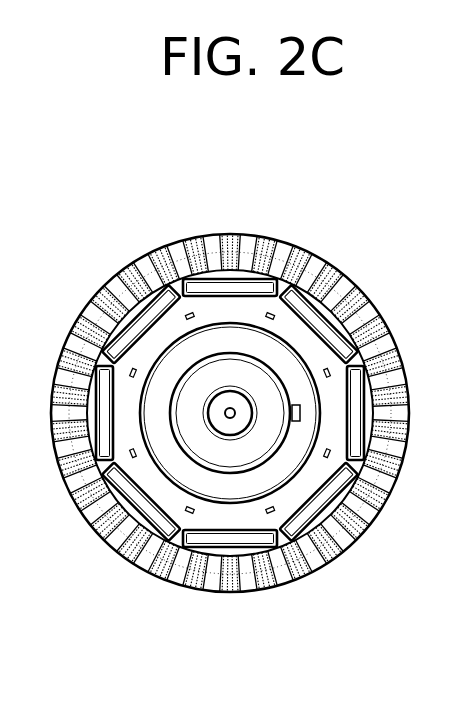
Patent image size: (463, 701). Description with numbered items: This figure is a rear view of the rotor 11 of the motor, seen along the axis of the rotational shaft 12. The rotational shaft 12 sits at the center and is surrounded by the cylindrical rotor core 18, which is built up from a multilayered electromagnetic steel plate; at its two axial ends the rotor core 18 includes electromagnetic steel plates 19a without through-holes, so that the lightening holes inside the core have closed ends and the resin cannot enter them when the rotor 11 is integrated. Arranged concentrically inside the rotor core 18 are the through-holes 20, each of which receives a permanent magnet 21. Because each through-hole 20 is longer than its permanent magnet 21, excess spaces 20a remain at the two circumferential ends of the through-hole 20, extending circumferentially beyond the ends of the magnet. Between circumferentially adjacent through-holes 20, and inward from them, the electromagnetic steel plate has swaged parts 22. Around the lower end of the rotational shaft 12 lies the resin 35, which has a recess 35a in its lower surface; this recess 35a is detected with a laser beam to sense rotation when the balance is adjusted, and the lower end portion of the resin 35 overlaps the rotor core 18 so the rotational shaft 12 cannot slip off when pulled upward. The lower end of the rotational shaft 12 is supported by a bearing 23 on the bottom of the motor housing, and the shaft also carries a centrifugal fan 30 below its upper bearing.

The rotor 11 is at (319, 212).
The rotational shaft 12 is at (231, 411).
The rotor core 18 is at (133, 262).
The electromagnetic steel plate without through-holes 19a is at (95, 423).
The through-hole 20 is at (338, 288).
The excess space 20a is at (181, 283).
The permanent magnet 21 is at (326, 270).
The swaged part 22 is at (275, 262).
The bearing 23 is at (263, 390).
The centrifugal fan 30 is at (73, 507).
The resin 35 is at (297, 413).
The recess 35a is at (373, 366).